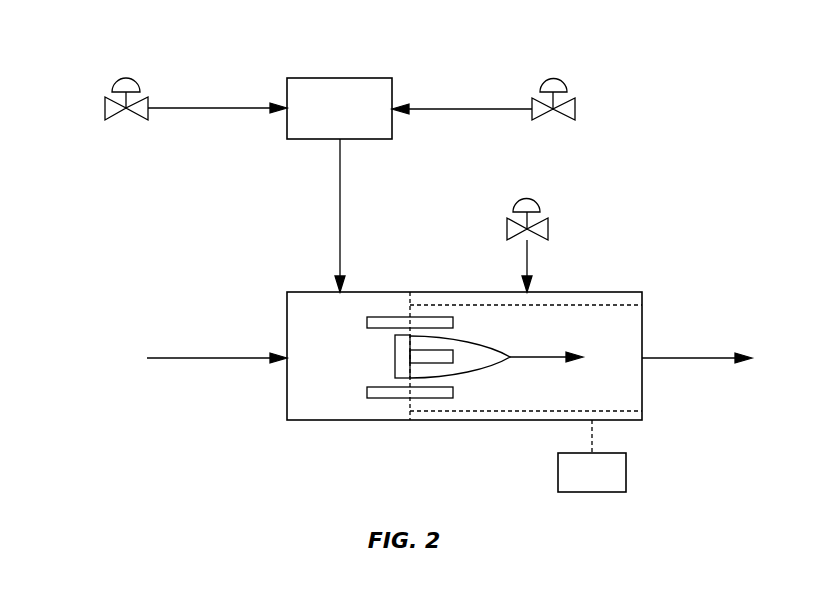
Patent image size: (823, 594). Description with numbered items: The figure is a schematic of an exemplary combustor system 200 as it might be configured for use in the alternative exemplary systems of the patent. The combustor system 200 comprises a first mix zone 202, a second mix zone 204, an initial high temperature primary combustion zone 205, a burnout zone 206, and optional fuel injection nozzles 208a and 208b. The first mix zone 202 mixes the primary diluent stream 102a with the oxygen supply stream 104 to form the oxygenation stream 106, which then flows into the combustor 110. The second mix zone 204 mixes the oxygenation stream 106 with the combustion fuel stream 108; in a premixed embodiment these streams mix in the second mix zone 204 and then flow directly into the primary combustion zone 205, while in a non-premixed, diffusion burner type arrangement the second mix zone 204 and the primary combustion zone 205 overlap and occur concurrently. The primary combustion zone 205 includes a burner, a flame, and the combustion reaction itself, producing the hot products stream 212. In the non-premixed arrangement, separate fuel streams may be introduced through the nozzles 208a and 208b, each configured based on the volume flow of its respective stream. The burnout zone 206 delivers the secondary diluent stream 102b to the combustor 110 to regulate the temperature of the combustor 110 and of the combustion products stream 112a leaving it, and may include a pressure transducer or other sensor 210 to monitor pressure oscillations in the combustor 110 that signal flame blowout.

The combustor system 200 is at (65, 29).
The oxygen supply stream 104 is at (202, 108).
The primary diluent stream 102a is at (465, 109).
The first mix zone 202 is at (339, 108).
The oxygenation stream 106 is at (340, 202).
The secondary diluent stream 102b is at (530, 259).
The combustor 110 is at (342, 421).
The burnout zone 206 is at (435, 292).
The combustion fuel stream 108 is at (200, 357).
The second mix zone 204 is at (327, 357).
The fuel injection nozzle 208a is at (367, 317).
The fuel injection nozzle 208b is at (367, 398).
The primary combustion zone 205 is at (473, 338).
The hot products stream 212 is at (528, 357).
The combustion products stream 112a is at (683, 357).
The pressure transducer or other sensor 210 is at (592, 456).